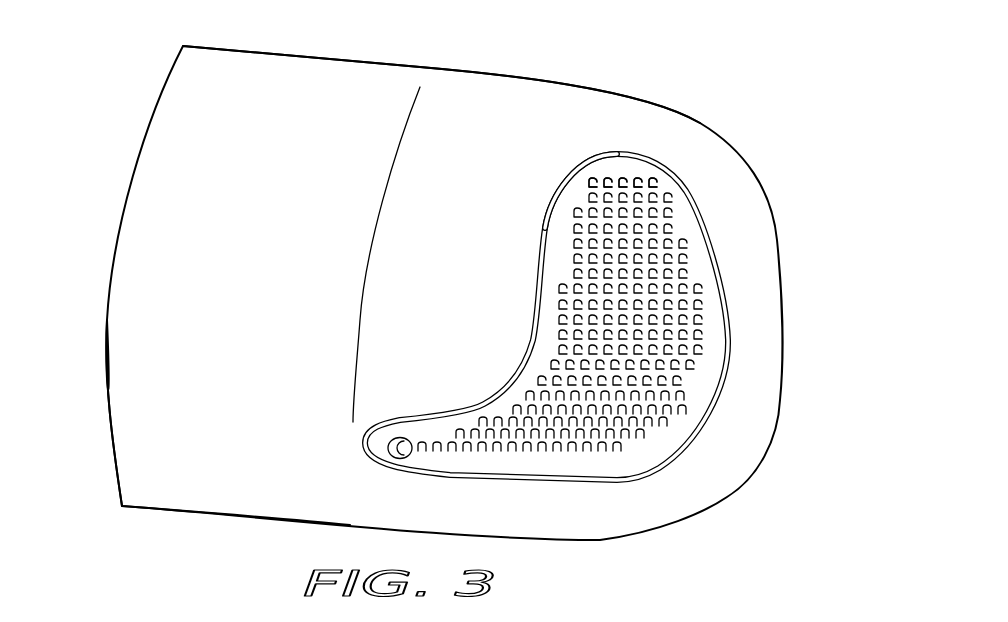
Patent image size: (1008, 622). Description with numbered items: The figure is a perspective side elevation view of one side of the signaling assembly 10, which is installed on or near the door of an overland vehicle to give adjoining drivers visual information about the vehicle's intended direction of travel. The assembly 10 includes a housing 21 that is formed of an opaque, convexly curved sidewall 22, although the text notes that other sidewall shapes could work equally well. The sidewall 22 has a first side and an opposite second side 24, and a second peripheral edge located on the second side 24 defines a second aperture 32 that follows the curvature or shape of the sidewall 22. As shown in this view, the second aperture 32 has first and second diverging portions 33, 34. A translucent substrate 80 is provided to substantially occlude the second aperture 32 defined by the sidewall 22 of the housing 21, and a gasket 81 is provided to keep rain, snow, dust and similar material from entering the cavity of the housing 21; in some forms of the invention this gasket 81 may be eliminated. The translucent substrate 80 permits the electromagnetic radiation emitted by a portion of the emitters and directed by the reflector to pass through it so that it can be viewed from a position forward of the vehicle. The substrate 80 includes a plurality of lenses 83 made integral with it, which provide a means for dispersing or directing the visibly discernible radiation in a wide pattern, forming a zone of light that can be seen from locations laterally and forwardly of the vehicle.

The signaling assembly 10 is at (712, 100).
The housing 21 is at (165, 238).
The convexly curved sidewall 22 is at (478, 97).
The second side 24 is at (190, 477).
The second aperture 32 is at (557, 237).
The first diverging portion 33 is at (493, 443).
The second diverging portion 34 is at (607, 183).
The translucent substrate 80 is at (630, 238).
The gasket 81 is at (557, 183).
The lenses 83 is at (647, 383).